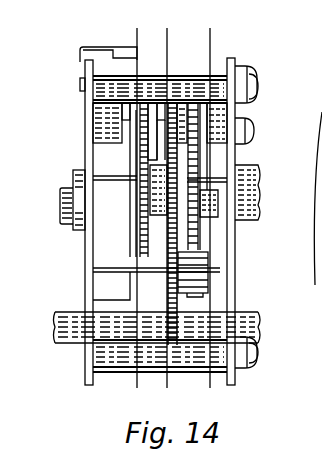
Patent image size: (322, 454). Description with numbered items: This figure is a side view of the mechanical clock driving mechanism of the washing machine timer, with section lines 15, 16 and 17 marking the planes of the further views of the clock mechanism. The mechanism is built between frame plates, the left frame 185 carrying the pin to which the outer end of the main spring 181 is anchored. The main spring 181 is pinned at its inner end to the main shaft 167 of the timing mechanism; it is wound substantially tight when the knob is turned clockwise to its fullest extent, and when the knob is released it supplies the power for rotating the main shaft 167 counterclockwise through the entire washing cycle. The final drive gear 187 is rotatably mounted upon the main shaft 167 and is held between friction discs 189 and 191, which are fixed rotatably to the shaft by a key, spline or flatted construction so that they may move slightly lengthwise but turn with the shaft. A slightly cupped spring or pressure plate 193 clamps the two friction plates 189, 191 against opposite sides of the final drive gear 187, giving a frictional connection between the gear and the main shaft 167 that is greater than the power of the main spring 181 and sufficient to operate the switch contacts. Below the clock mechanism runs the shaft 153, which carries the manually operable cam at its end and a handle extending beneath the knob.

The section line 15 is at (203, 391).
The section line 16 is at (160, 391).
The section line 17 is at (128, 391).
The shaft 153 is at (252, 321).
The main shaft 167 is at (61, 207).
The main spring 181 is at (97, 248).
The left frame 185 is at (91, 283).
The final drive gear 187 is at (184, 152).
The friction disc 189 is at (214, 166).
The friction disc 191 is at (190, 160).
The pressure plate 193 is at (210, 234).